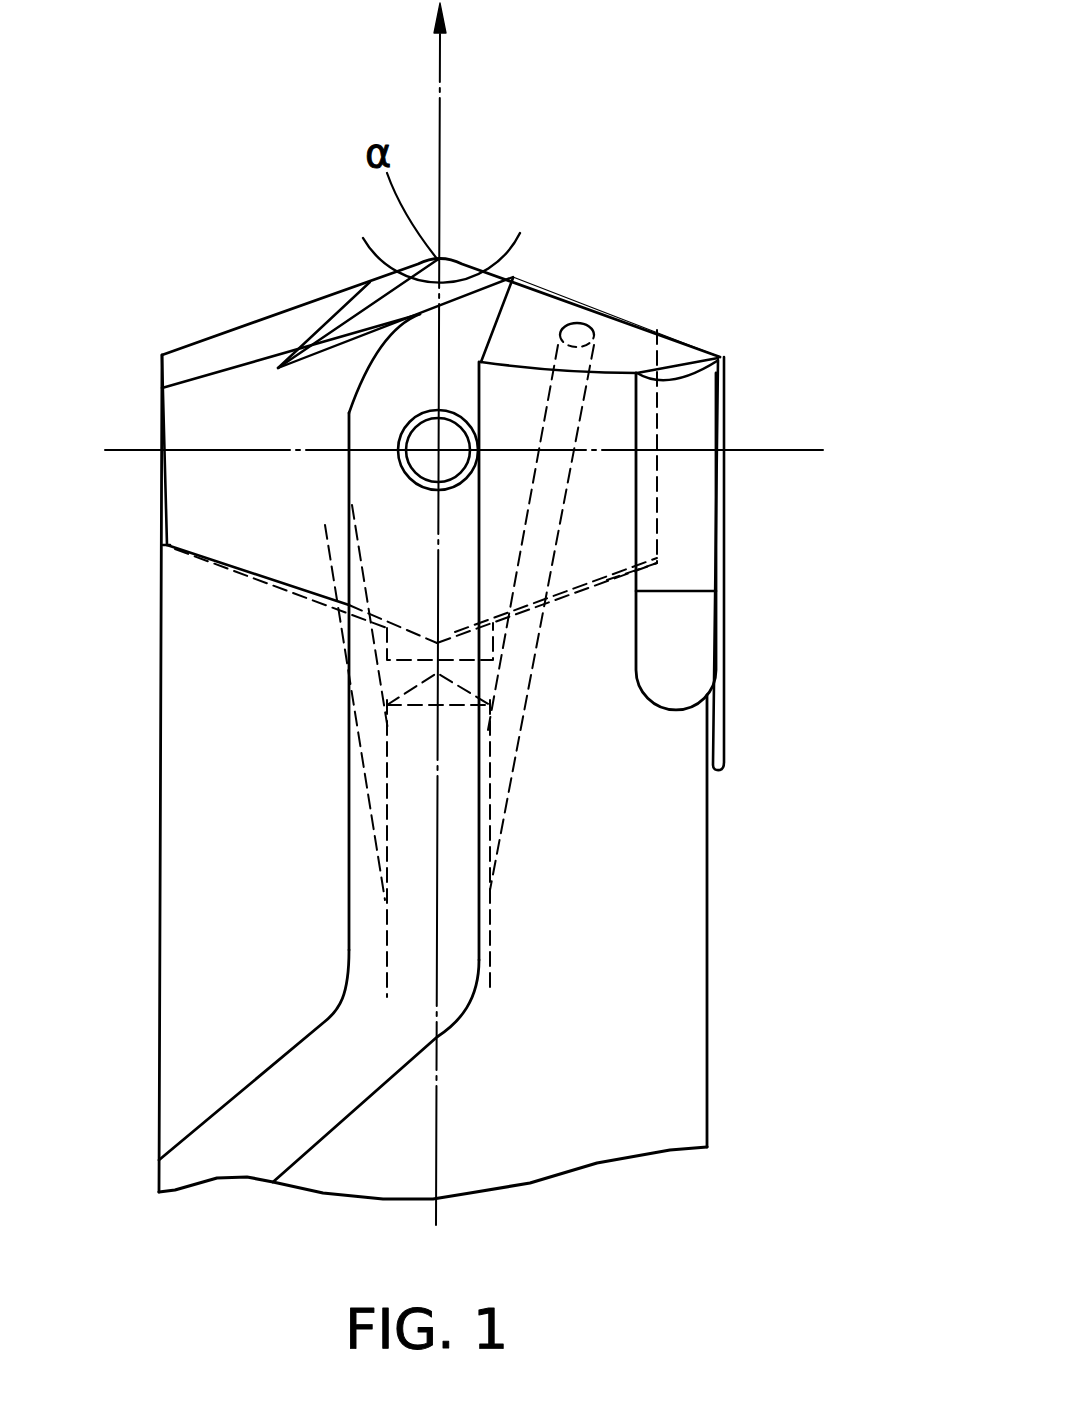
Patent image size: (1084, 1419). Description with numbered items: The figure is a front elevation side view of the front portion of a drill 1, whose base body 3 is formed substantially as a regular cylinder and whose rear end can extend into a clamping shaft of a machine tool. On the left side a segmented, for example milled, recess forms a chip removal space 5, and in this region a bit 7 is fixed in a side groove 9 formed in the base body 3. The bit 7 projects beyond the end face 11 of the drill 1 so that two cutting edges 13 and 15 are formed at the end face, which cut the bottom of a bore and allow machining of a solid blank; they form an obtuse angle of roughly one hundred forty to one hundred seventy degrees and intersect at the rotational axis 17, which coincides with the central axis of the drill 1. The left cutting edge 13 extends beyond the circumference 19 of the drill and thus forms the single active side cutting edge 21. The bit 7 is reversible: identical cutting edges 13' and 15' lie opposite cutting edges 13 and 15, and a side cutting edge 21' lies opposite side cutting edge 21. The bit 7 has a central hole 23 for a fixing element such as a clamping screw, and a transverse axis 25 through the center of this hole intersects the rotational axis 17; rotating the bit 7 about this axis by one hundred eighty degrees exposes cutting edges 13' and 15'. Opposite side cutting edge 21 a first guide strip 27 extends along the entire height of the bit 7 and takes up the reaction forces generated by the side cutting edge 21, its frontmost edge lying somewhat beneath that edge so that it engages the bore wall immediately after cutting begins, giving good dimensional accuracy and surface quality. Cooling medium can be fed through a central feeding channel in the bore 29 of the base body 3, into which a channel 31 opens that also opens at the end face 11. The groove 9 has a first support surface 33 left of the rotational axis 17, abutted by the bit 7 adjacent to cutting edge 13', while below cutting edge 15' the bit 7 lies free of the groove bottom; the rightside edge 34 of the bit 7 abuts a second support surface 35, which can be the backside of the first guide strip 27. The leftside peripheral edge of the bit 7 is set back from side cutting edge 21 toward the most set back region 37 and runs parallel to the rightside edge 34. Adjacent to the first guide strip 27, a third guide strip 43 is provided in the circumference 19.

The drill 1 is at (847, 368).
The base body 3 is at (605, 1098).
The chip removal space 5 is at (190, 897).
The bit 7 is at (183, 420).
The side groove 9 is at (450, 638).
The end face 11 is at (637, 337).
The cutting edge 13 is at (380, 279).
The cutting edge 13' is at (302, 621).
The cutting edge 15 is at (616, 263).
The cutting edge 15' is at (547, 632).
The rotational axis 17 is at (445, 133).
The circumference 19 is at (160, 658).
The side cutting edge 21 is at (147, 395).
The side cutting edge 21' is at (123, 506).
The central hole 23 is at (447, 408).
The transverse axis 25 is at (803, 452).
The first guide strip 27 is at (724, 560).
The bore 29 is at (432, 972).
The channel 31 is at (581, 322).
The first support surface 33 is at (255, 595).
The rightside edge 34 is at (658, 470).
The second support surface 35 is at (700, 589).
The most set back region 37 is at (168, 545).
The third guide strip 43 is at (705, 397).